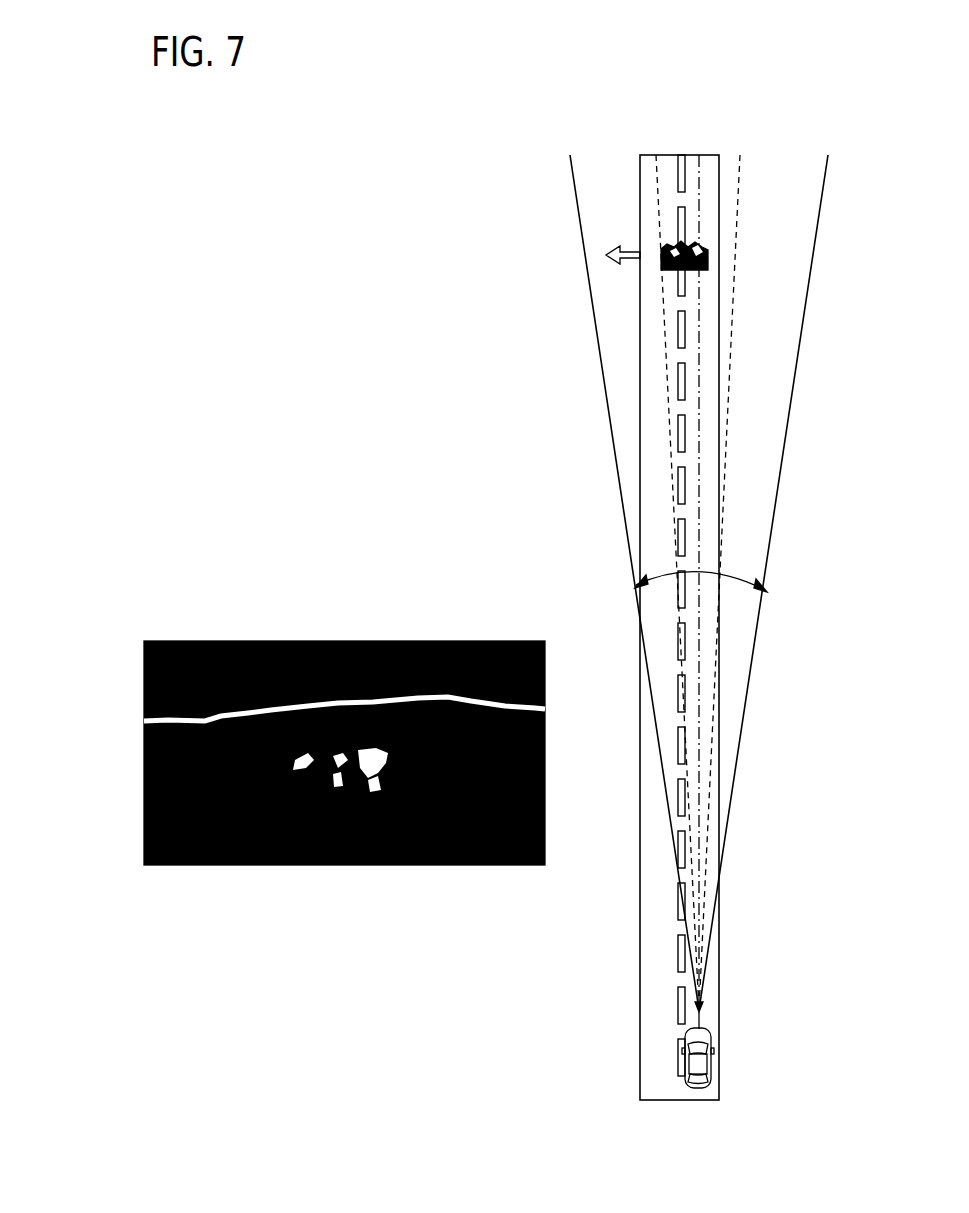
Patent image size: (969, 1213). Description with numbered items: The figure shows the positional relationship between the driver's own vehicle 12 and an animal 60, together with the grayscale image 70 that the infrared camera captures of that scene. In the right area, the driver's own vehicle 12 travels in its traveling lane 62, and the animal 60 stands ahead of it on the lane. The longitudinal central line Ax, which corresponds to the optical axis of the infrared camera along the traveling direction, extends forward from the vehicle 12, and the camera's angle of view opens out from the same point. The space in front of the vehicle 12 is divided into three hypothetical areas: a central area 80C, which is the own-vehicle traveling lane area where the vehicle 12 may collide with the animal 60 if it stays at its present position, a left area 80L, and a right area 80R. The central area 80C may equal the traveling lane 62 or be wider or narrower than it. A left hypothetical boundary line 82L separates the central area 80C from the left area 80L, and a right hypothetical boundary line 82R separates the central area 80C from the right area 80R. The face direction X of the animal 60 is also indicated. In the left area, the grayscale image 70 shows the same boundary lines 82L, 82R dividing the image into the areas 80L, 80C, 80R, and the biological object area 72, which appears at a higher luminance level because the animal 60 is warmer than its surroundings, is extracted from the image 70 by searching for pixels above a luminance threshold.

The driver's own vehicle 12 is at (692, 1062).
The animal 60 is at (667, 237).
The traveling lane 62 is at (675, 1095).
The grayscale image 70 is at (173, 626).
The biological object area 72 is at (136, 758).
The left area 80L is at (211, 633).
The central area 80C is at (346, 633).
The right area 80R is at (497, 633).
The left hypothetical boundary line 82L is at (655, 331).
The right hypothetical boundary line 82R is at (722, 432).
The longitudinal central line Ax is at (694, 178).
The face direction X is at (620, 252).